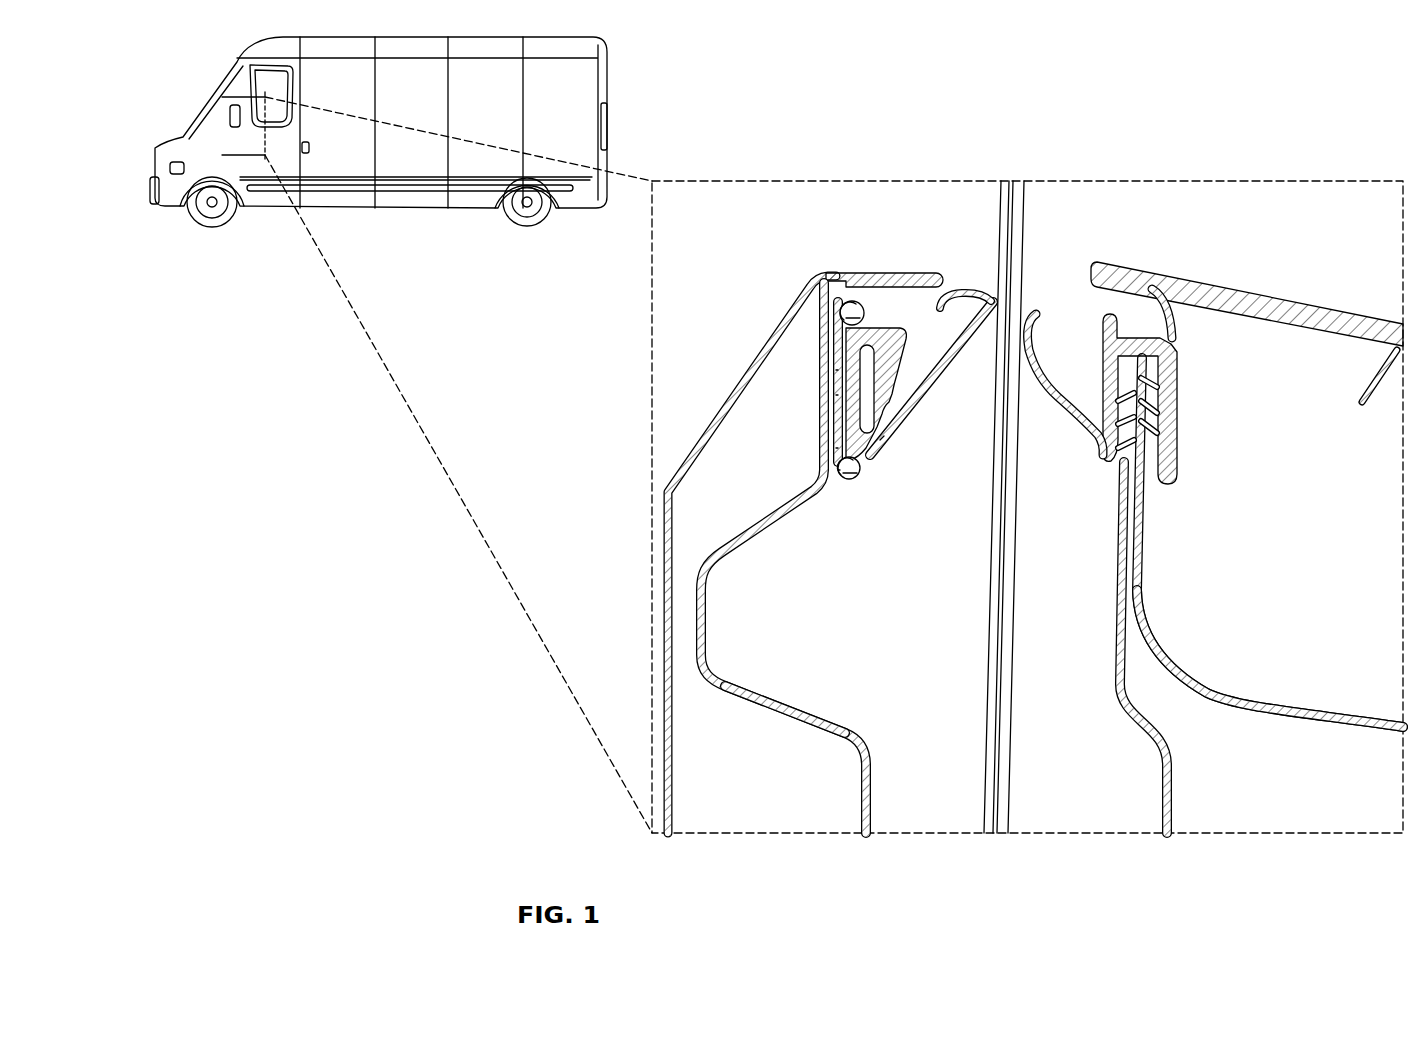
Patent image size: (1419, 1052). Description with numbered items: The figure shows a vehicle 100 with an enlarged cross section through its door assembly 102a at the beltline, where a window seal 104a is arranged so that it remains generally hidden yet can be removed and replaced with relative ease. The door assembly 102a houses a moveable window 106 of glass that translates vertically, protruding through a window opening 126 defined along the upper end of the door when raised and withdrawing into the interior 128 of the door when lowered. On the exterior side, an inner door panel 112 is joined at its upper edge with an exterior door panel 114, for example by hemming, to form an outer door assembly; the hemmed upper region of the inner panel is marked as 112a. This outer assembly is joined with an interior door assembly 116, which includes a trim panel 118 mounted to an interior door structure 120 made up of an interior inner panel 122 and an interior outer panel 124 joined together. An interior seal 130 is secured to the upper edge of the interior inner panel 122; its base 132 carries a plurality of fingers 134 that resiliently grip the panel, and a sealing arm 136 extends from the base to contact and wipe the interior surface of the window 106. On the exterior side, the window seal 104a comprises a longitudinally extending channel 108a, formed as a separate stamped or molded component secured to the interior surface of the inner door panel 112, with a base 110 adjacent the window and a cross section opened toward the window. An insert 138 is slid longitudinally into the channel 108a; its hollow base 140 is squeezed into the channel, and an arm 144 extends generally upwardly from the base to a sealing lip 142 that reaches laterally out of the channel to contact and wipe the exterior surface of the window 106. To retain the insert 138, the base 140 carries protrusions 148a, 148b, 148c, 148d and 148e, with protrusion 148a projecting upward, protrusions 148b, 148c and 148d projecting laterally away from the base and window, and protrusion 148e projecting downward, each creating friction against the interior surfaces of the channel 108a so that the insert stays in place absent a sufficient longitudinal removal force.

The vehicle 100 is at (433, 104).
The door assembly 102a is at (232, 153).
The window seal 104a is at (917, 484).
The moveable window 106 is at (232, 96).
The channel 108a is at (845, 479).
The base 110 is at (838, 348).
The inner door panel 112 is at (848, 730).
The inner panel flange 112a is at (787, 703).
The exterior door panel 114 is at (668, 618).
The interior door assembly 116 is at (1247, 516).
The trim panel 118 is at (1270, 304).
The interior door structure 120 is at (1180, 633).
The interior inner panel 122 is at (1173, 793).
The interior outer panel 124 is at (1227, 697).
The window opening 126 is at (1114, 325).
The interior 128 is at (779, 379).
The interior seal 130 is at (1172, 352).
The base 132 is at (1172, 383).
The fingers 134 is at (1173, 415).
The sealing arm 136 is at (1050, 378).
The insert 138 is at (873, 306).
The base 140 is at (848, 330).
The sealing lip 142 is at (948, 298).
The arm 144 is at (957, 347).
The protrusion 148a is at (841, 318).
The protrusion 148b is at (836, 370).
The protrusion 148c is at (836, 395).
The protrusion 148d is at (836, 448).
The protrusion 148e is at (838, 470).